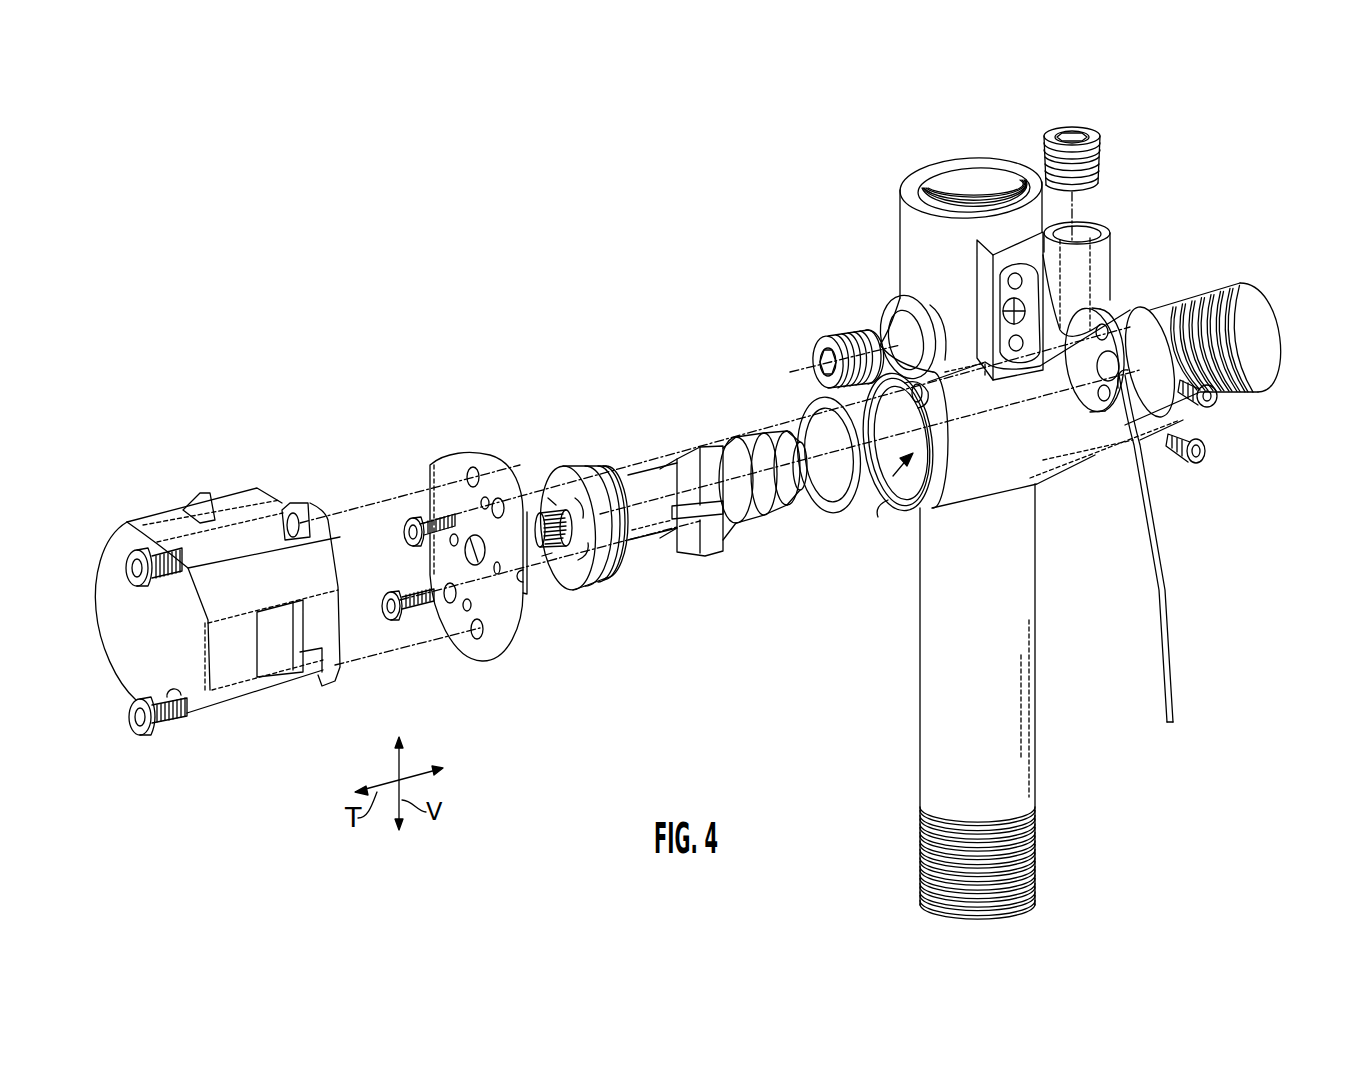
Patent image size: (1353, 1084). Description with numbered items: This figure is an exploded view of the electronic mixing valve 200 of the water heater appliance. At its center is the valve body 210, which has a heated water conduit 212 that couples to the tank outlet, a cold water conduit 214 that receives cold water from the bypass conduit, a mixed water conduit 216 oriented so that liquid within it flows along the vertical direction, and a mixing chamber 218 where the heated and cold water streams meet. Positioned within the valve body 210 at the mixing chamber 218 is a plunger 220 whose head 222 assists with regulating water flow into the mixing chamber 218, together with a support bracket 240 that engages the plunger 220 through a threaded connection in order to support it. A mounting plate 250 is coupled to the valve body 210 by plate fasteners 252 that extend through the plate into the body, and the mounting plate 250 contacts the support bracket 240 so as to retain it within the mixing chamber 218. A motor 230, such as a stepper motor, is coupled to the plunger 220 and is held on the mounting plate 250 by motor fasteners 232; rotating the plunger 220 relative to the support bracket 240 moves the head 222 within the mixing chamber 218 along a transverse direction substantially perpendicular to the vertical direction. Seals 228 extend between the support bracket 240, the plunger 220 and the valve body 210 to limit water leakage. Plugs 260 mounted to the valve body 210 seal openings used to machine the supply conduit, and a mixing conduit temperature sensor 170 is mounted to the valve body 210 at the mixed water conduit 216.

The mixing valve 200 is at (1227, 135).
The valve body 210 is at (1036, 485).
The heated water conduit 212 is at (930, 700).
The cold water conduit 214 is at (1157, 320).
The mixed water conduit 216 is at (913, 267).
The mixing chamber 218 is at (883, 505).
The plunger 220 is at (542, 492).
The head 222 is at (742, 432).
The seals 228 is at (842, 512).
The motor 230 is at (123, 543).
The motor fasteners 232 is at (138, 586).
The support bracket 240 is at (647, 535).
The mounting plate 250 is at (493, 648).
The plate fasteners 252 is at (414, 538).
The plugs 260 is at (1071, 126).
The mixing conduit temperature sensor 170 is at (1072, 388).